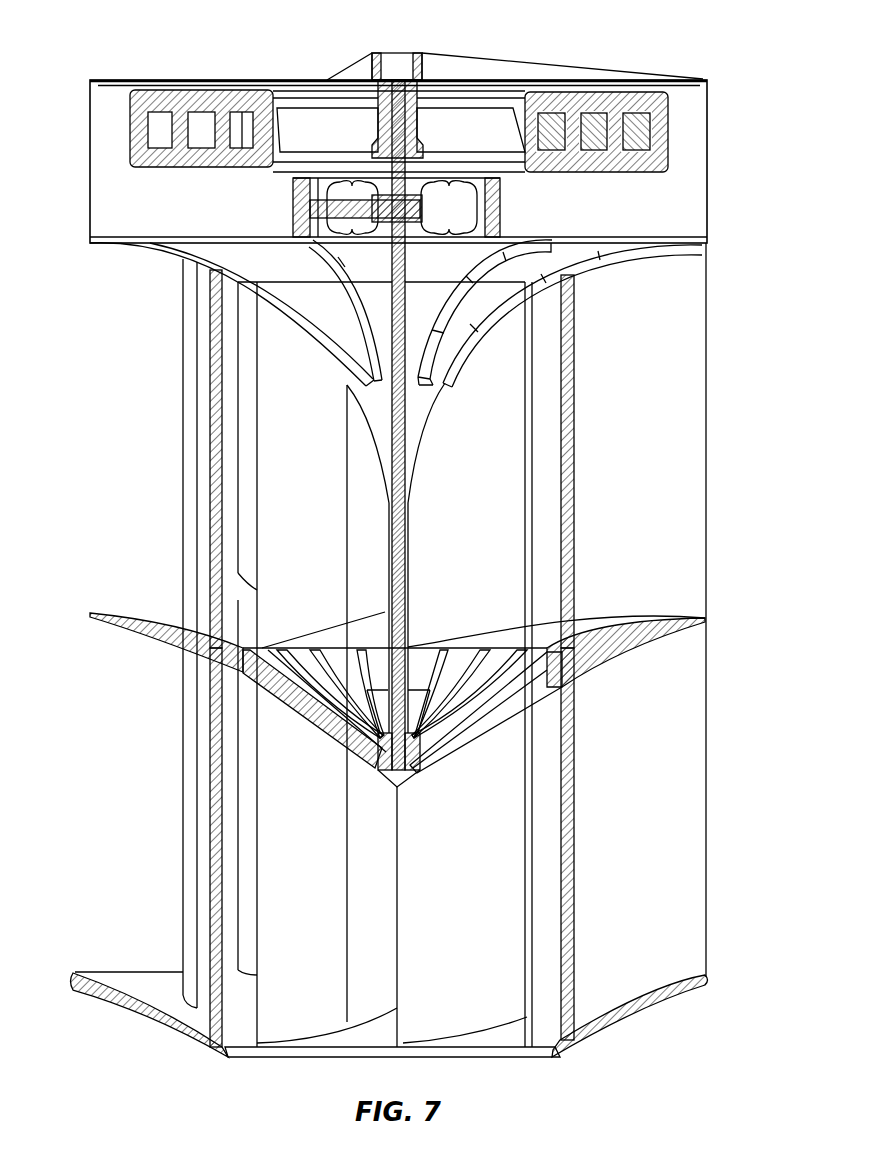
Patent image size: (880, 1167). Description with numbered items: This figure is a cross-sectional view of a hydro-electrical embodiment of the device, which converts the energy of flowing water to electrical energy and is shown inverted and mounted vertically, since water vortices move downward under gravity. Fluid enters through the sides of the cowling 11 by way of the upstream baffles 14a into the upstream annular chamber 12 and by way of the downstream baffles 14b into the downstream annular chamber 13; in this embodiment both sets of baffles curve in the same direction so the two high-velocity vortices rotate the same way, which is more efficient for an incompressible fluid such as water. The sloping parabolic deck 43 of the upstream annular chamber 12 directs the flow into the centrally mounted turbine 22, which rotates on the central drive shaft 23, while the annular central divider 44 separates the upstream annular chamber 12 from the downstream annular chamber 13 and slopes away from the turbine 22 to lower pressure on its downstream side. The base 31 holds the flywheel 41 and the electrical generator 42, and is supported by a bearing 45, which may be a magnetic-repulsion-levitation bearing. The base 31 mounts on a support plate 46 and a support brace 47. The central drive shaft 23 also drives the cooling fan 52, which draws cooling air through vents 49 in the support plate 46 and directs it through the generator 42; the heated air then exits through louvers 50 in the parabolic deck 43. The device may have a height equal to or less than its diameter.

The cowling 11 is at (170, 1020).
The upstream annular chamber 12 is at (498, 565).
The downstream annular chamber 13 is at (490, 953).
The upstream baffles 14a is at (693, 483).
The downstream baffles 14b is at (695, 835).
The turbine 22 is at (337, 700).
The central drive shaft 23 is at (392, 318).
The base 31 is at (88, 153).
The flywheel 41 is at (650, 90).
The electrical generator 42 is at (290, 213).
The parabolic deck 43 is at (370, 407).
The annular central divider 44 is at (168, 628).
The bearing 45 is at (385, 53).
The support plate 46 is at (130, 75).
The support brace 47 is at (520, 67).
The vents 49 is at (318, 73).
The louvers 50 is at (436, 345).
The cooling fan 52 is at (450, 127).